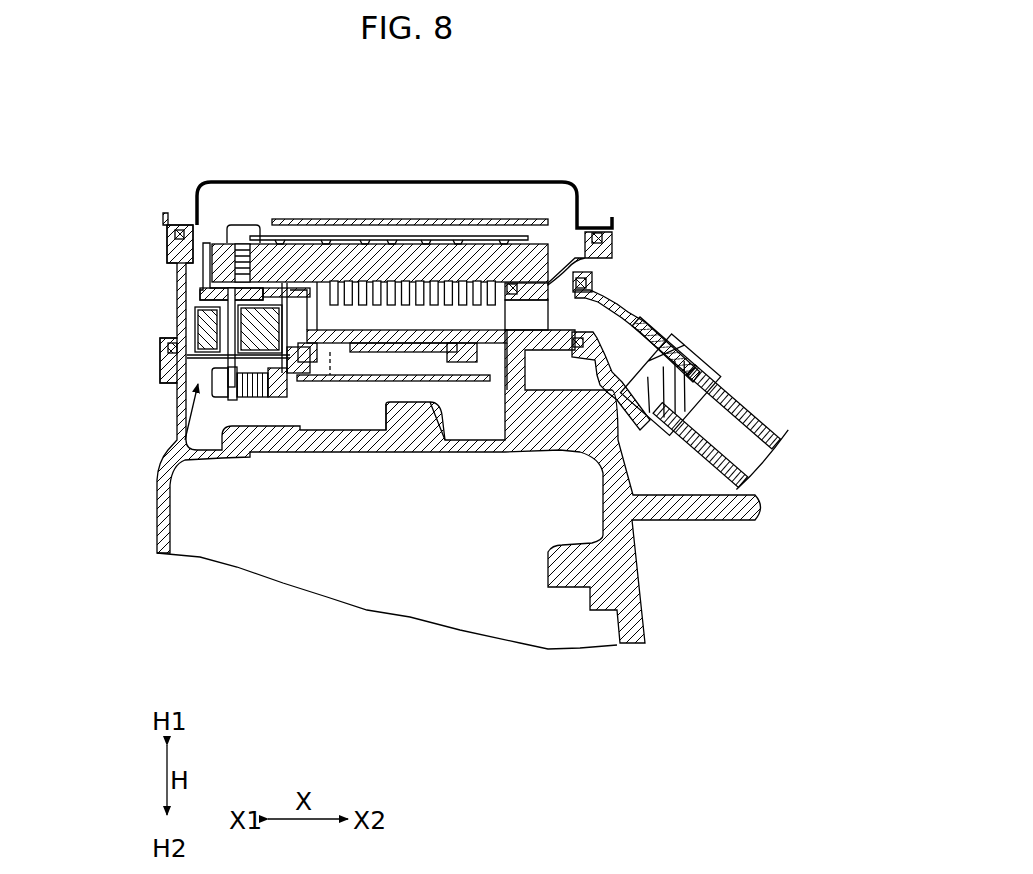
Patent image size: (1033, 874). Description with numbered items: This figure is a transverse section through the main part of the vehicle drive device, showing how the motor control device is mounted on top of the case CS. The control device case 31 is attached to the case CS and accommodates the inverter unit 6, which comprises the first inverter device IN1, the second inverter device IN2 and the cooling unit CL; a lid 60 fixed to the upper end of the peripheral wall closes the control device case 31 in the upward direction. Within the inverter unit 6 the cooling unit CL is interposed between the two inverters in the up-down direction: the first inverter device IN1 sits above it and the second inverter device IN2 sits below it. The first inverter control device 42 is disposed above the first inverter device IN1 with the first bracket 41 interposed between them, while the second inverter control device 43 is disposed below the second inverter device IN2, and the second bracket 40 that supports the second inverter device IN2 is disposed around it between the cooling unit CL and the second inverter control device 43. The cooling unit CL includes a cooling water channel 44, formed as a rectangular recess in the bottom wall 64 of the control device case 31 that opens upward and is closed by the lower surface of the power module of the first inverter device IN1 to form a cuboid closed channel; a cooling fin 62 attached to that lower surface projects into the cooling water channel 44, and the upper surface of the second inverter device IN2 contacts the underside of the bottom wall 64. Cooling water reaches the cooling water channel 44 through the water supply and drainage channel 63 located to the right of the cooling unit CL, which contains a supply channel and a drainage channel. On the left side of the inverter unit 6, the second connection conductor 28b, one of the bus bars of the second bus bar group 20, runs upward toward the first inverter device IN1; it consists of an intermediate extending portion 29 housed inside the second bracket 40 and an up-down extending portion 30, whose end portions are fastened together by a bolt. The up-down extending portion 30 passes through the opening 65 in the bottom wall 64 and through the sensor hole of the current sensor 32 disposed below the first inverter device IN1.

The inverter unit 6 is at (404, 162).
The second connection conductor 28b is at (213, 237).
The first inverter device IN1 is at (380, 323).
The lid 60 is at (440, 181).
The first inverter control device 42 is at (487, 219).
The first bracket 41 is at (520, 237).
The second bus bar group 20 is at (200, 272).
The control device case 31 is at (178, 289).
The current sensor 32 is at (195, 320).
The up-down extending portion 30 is at (170, 357).
The opening 65 is at (180, 433).
The case CS is at (160, 519).
The intermediate extending portion 29 is at (263, 400).
The second bracket 40 is at (305, 373).
The second inverter device IN2 is at (380, 382).
The cooling unit CL is at (378, 330).
The bottom wall 64 is at (402, 352).
The second inverter control device 43 is at (443, 381).
The cooling water channel 44 is at (462, 318).
The cooling fin 62 is at (508, 400).
The water supply and drainage channel 63 is at (640, 315).